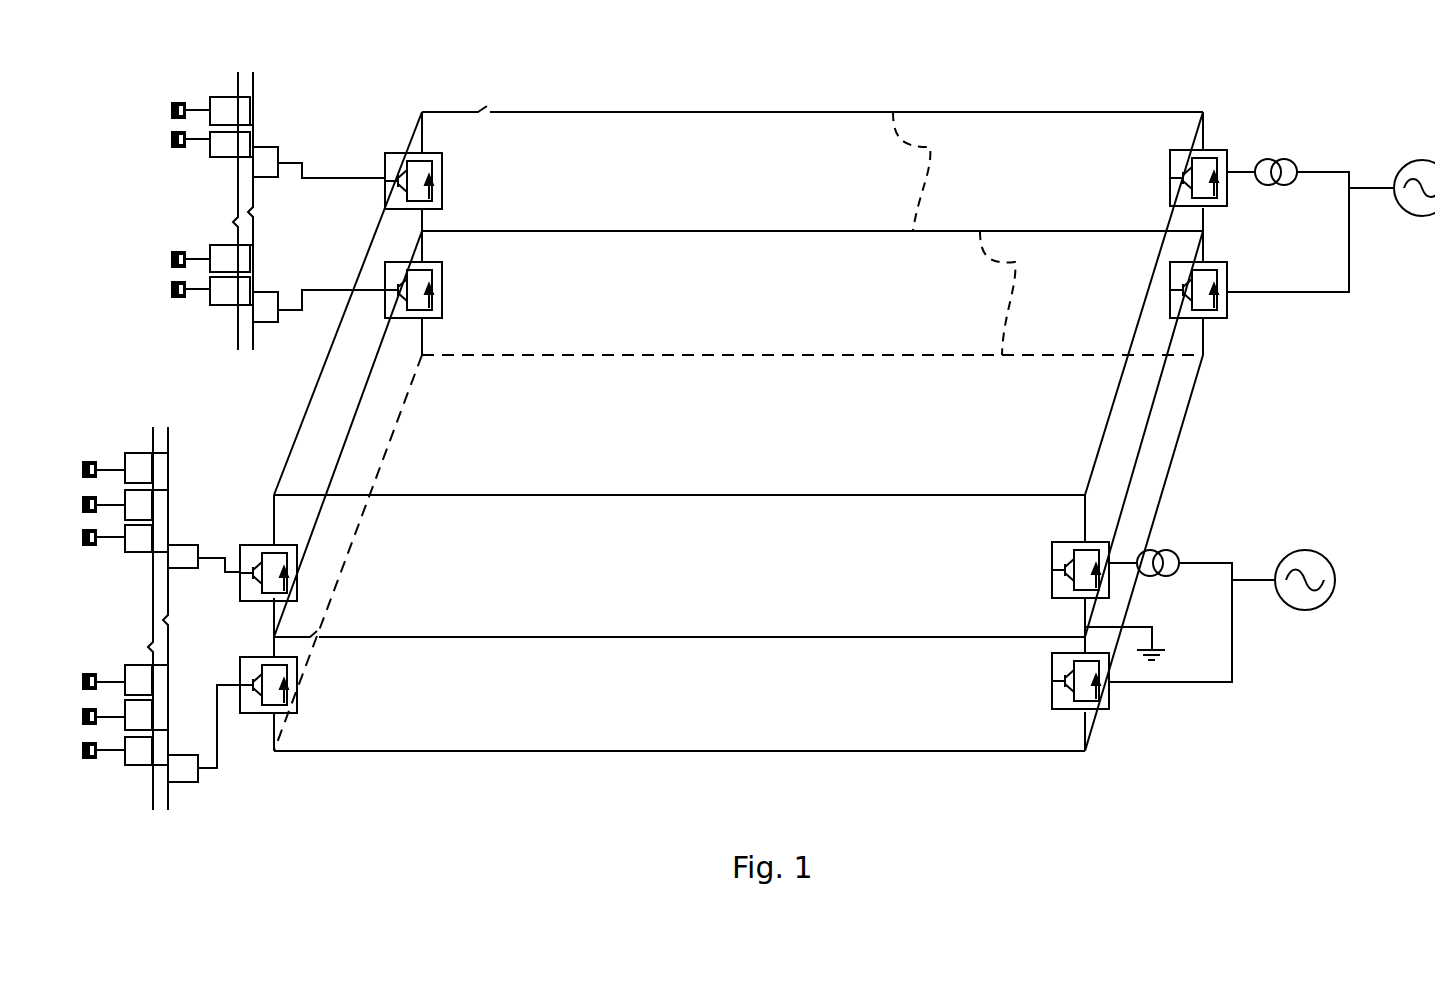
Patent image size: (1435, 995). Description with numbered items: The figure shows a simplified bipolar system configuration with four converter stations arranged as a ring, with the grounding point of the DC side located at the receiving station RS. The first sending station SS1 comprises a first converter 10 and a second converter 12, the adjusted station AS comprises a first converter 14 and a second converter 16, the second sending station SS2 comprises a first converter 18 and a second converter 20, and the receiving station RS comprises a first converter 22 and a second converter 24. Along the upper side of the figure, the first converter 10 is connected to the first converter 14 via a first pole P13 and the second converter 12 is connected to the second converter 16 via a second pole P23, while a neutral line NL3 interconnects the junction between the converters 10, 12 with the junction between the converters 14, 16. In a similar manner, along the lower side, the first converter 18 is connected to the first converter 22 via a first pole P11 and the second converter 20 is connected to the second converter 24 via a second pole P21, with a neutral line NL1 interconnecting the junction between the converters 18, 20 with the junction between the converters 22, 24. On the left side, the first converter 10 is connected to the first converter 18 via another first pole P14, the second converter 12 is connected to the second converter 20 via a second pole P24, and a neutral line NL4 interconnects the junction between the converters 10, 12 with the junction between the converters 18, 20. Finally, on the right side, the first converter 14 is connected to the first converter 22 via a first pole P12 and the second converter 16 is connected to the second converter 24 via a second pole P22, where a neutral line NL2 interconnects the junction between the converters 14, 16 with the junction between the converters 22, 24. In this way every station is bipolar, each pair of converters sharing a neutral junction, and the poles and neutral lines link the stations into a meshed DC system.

The first converter 10 is at (383, 150).
The second converter 12 is at (383, 280).
The first converter 14 is at (1172, 197).
The second converter 16 is at (1227, 322).
The first converter 18 is at (258, 538).
The second converter 20 is at (235, 657).
The first converter 22 is at (1045, 582).
The second converter 24 is at (1045, 703).
The first pole P13 is at (568, 110).
The neutral line NL3 is at (658, 228).
The second pole P23 is at (552, 352).
The first pole P11 is at (522, 493).
The neutral line NL1 is at (603, 636).
The second pole P21 is at (460, 750).
The first pole P14 is at (295, 433).
The neutral line NL4 is at (358, 423).
The second pole P24 is at (392, 443).
The first pole P12 is at (1097, 448).
The neutral line NL2 is at (1140, 450).
The second pole P22 is at (1168, 485).
The first sending station SS1 is at (285, 184).
The second sending station SS2 is at (186, 640).
The adjusted station AS is at (1326, 163).
The receiving station RS is at (1210, 666).